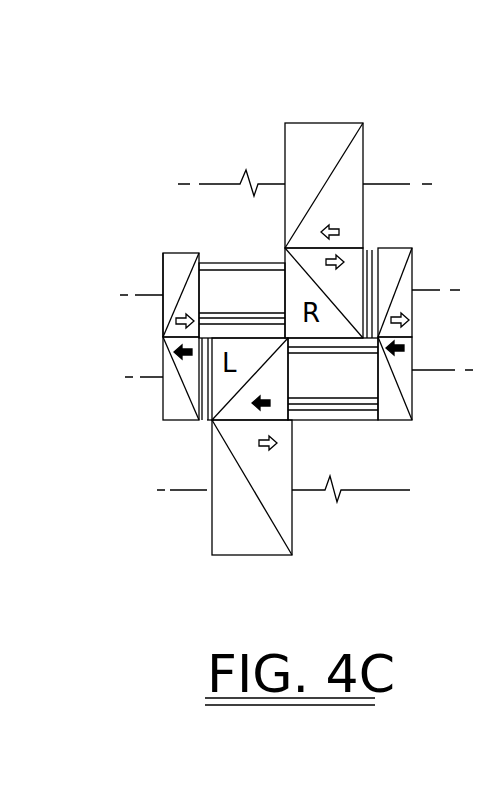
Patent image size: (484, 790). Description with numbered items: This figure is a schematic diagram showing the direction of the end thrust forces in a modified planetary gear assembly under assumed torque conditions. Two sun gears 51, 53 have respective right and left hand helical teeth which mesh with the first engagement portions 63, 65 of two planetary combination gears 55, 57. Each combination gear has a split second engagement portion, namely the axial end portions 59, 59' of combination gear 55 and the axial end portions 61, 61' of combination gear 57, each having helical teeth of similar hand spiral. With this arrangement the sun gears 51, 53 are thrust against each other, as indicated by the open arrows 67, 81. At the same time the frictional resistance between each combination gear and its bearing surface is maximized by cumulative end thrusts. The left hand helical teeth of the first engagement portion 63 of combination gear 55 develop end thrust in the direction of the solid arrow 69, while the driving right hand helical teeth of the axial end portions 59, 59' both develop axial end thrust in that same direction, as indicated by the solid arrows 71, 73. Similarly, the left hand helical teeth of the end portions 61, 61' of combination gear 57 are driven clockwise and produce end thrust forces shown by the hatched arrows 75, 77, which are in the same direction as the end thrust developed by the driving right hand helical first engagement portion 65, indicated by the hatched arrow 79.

The sun gear 51 is at (241, 556).
The sun gear 53 is at (326, 130).
The combination gear 55 is at (163, 385).
The combination gear 57 is at (163, 320).
The axial end portion 59 is at (426, 378).
The axial end portion 59' is at (178, 441).
The axial end portion 61 is at (157, 272).
The axial end portion 61' is at (425, 269).
The first engagement portion 63 is at (285, 375).
The first engagement portion 65 is at (304, 289).
The open arrow 67 is at (256, 446).
The solid arrow 69 is at (278, 398).
The solid arrow 71 is at (176, 352).
The solid arrow 73 is at (410, 352).
The hatched arrow 75 is at (192, 312).
The hatched arrow 77 is at (411, 318).
The hatched arrow 79 is at (338, 250).
The open arrow 81 is at (320, 231).